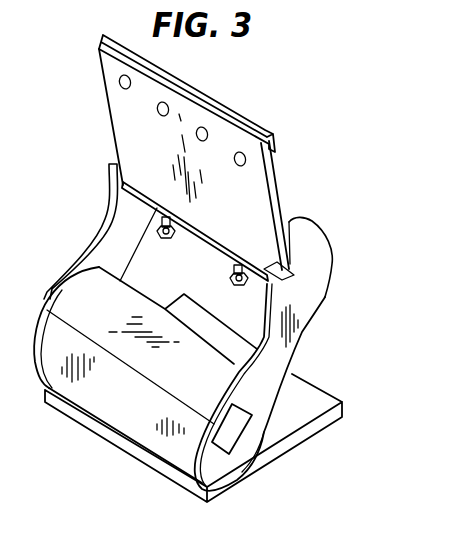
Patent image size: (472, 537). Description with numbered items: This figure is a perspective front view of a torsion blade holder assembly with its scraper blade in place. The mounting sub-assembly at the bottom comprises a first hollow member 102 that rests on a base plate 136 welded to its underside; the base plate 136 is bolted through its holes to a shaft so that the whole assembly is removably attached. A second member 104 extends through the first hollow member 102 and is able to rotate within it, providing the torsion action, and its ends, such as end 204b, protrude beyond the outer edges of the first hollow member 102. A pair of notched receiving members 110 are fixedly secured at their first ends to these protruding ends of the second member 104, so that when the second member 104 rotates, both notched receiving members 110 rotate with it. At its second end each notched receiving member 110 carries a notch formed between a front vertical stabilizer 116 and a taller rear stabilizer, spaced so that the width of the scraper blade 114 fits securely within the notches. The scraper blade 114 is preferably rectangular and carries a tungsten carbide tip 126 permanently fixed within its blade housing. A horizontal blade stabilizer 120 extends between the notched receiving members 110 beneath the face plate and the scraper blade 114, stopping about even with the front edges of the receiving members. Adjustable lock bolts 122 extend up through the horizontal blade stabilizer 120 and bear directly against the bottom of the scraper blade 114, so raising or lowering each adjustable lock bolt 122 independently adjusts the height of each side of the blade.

The first hollow member 102 is at (98, 397).
The second member 104 is at (238, 452).
The notched receiving member 110 is at (290, 380).
The scraper blade 114 is at (264, 192).
The front vertical stabilizer 116 is at (107, 183).
The horizontal blade stabilizer 120 is at (200, 238).
The adjustable lock bolt 122 is at (164, 238).
The tungsten carbide tip 126 is at (200, 95).
The base plate 136 is at (140, 463).
The end of second member 204b is at (268, 437).